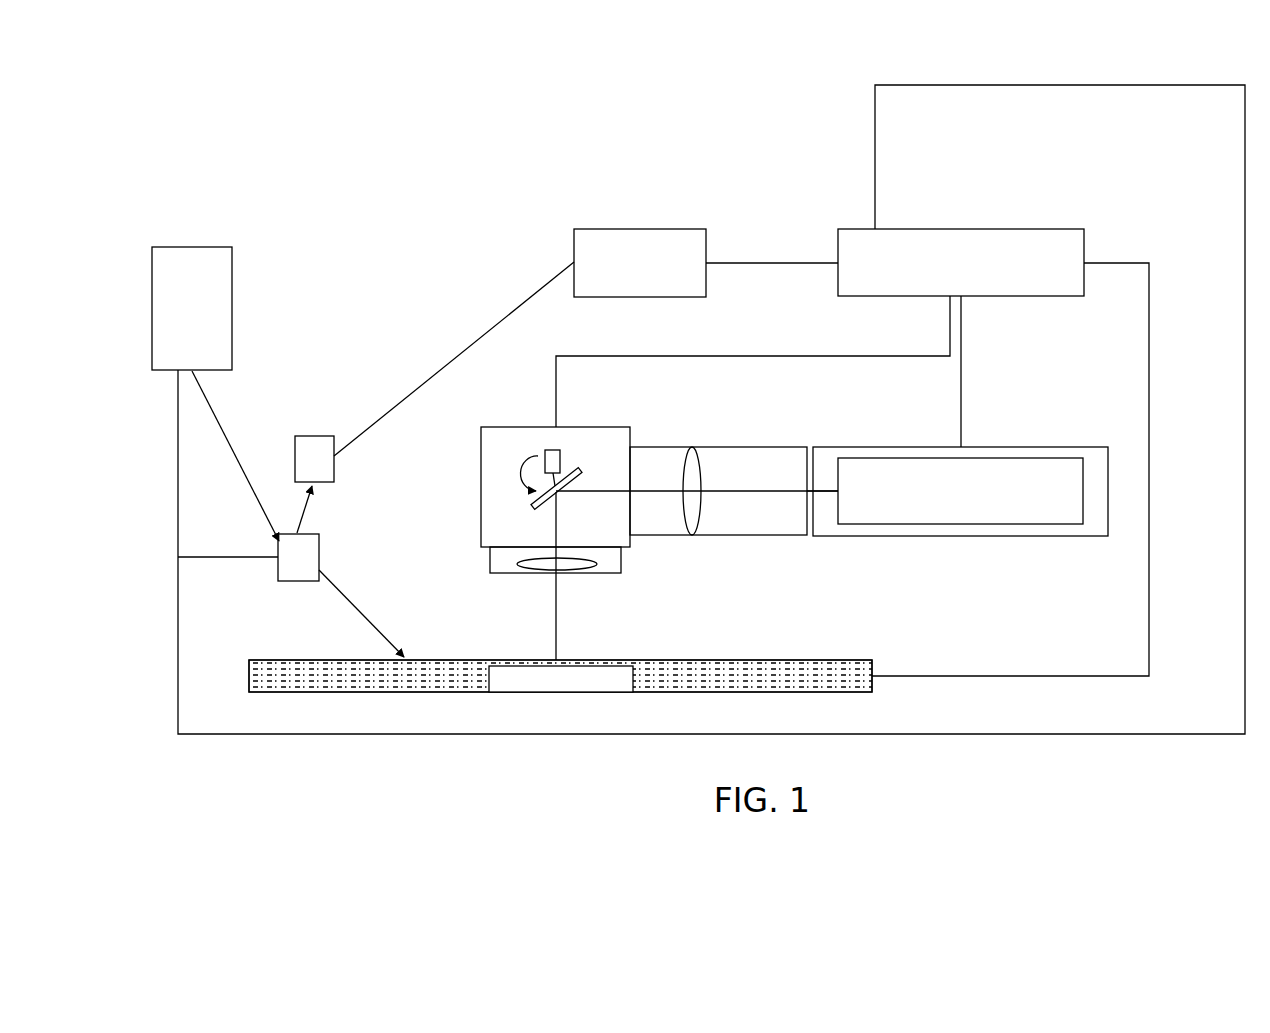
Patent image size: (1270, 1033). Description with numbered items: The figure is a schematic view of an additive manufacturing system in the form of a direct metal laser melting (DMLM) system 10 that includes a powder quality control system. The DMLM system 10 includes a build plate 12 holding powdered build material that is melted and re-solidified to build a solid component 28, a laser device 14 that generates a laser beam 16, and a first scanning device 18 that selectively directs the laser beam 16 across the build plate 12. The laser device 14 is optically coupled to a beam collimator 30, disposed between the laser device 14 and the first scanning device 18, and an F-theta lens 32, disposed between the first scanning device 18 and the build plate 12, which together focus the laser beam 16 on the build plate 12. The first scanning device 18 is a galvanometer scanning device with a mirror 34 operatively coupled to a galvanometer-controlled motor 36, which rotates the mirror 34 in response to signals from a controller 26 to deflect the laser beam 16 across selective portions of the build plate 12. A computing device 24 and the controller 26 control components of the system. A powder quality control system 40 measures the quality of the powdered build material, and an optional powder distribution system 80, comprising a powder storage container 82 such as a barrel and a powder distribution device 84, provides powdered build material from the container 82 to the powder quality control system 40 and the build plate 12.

The DMLM system 10 is at (1062, 148).
The build plate 12 is at (760, 660).
The laser device 14 is at (961, 537).
The laser beam 16 is at (752, 491).
The first scanning device 18 is at (508, 427).
The computing device 24 is at (640, 229).
The controller 26 is at (961, 229).
The solid component 28 is at (603, 666).
The beam collimator 30 is at (699, 513).
The F-theta lens 32 is at (541, 574).
The mirror 34 is at (584, 468).
The galvanometer-controlled motor 36 is at (553, 450).
The powder quality control system 40 is at (314, 436).
The powder distribution system 80 is at (246, 204).
The powder storage container 82 is at (193, 247).
The powder distribution device 84 is at (320, 545).